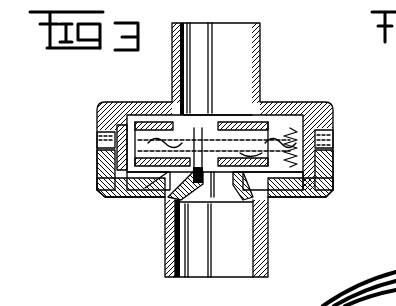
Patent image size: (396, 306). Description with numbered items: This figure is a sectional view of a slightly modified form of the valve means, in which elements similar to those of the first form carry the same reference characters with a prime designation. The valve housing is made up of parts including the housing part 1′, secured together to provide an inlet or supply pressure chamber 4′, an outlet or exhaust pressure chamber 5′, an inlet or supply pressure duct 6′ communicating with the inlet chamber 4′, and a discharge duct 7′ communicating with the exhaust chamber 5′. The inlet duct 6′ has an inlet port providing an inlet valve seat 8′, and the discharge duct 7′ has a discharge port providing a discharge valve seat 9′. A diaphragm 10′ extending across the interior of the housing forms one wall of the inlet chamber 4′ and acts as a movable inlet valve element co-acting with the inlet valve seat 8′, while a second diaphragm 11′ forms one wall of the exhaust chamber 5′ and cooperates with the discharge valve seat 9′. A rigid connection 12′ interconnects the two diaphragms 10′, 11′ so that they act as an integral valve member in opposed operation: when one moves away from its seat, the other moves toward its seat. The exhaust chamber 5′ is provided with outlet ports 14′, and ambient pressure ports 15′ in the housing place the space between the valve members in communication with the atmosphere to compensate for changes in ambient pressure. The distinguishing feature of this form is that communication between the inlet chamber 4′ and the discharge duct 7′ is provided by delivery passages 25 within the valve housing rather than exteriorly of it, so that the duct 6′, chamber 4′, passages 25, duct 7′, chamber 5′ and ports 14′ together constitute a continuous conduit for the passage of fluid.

The valve housing part 1′ is at (335, 106).
The inlet or supply pressure chamber 4′ is at (288, 178).
The outlet or exhaust pressure chamber 5′ is at (278, 133).
The inlet or supply pressure duct 6′ is at (258, 247).
The discharge duct 7′ is at (243, 112).
The inlet valve seat 8′ is at (228, 176).
The discharge valve seat 9′ is at (246, 138).
The diaphragm (inlet valve element) 10′ is at (162, 194).
The diaphragm (discharge valve element) 11′ is at (167, 140).
The rigid connection 12′ is at (130, 199).
The outlet ports 14′ is at (97, 136).
The ambient pressure ports 15′ is at (335, 148).
The delivery passages 25 is at (100, 157).